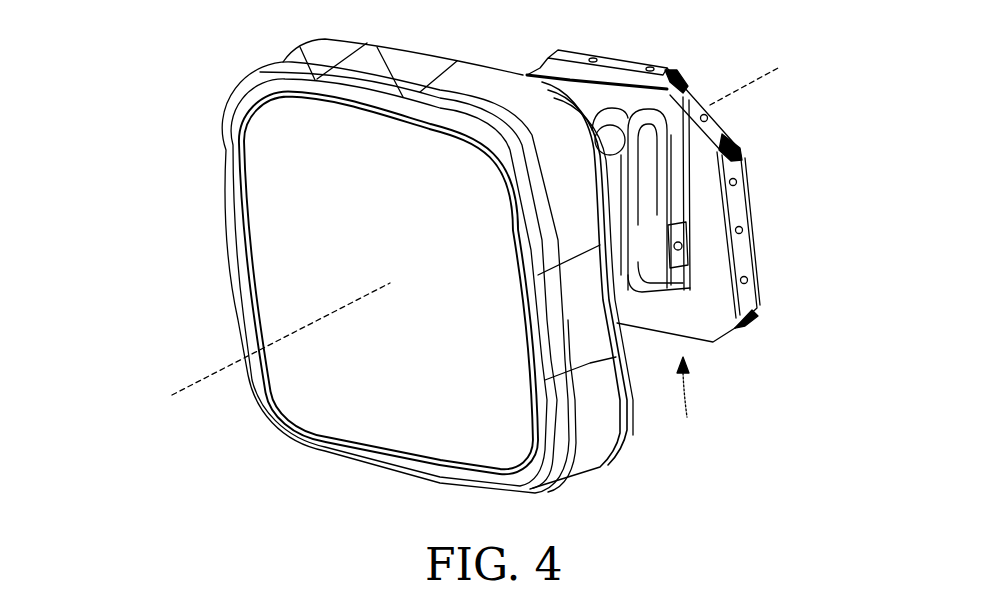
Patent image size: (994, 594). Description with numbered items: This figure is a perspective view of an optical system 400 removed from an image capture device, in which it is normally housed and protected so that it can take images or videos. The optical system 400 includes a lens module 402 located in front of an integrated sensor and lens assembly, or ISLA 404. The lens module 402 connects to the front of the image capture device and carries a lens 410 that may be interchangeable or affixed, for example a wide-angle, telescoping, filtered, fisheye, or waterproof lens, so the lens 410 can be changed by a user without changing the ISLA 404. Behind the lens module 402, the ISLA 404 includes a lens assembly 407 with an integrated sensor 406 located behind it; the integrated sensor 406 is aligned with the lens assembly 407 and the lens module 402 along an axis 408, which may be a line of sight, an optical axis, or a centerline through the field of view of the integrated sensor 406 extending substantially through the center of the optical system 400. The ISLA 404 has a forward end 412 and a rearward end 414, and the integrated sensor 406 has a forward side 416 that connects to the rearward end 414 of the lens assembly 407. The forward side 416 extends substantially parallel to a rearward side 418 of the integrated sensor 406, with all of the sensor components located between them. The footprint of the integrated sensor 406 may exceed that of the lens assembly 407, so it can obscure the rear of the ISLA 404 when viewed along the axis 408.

The optical system 400 is at (140, 89).
The lens module 402 is at (307, 443).
The integrated sensor and lens assembly (ISLA) 404 is at (696, 400).
The integrated sensor 406 is at (750, 317).
The lens assembly 407 is at (609, 125).
The axis 408 is at (210, 377).
The lens 410 is at (420, 417).
The forward end 412 is at (625, 372).
The rearward end 414 is at (667, 183).
The forward side 416 is at (720, 307).
The rearward side 418 is at (730, 135).